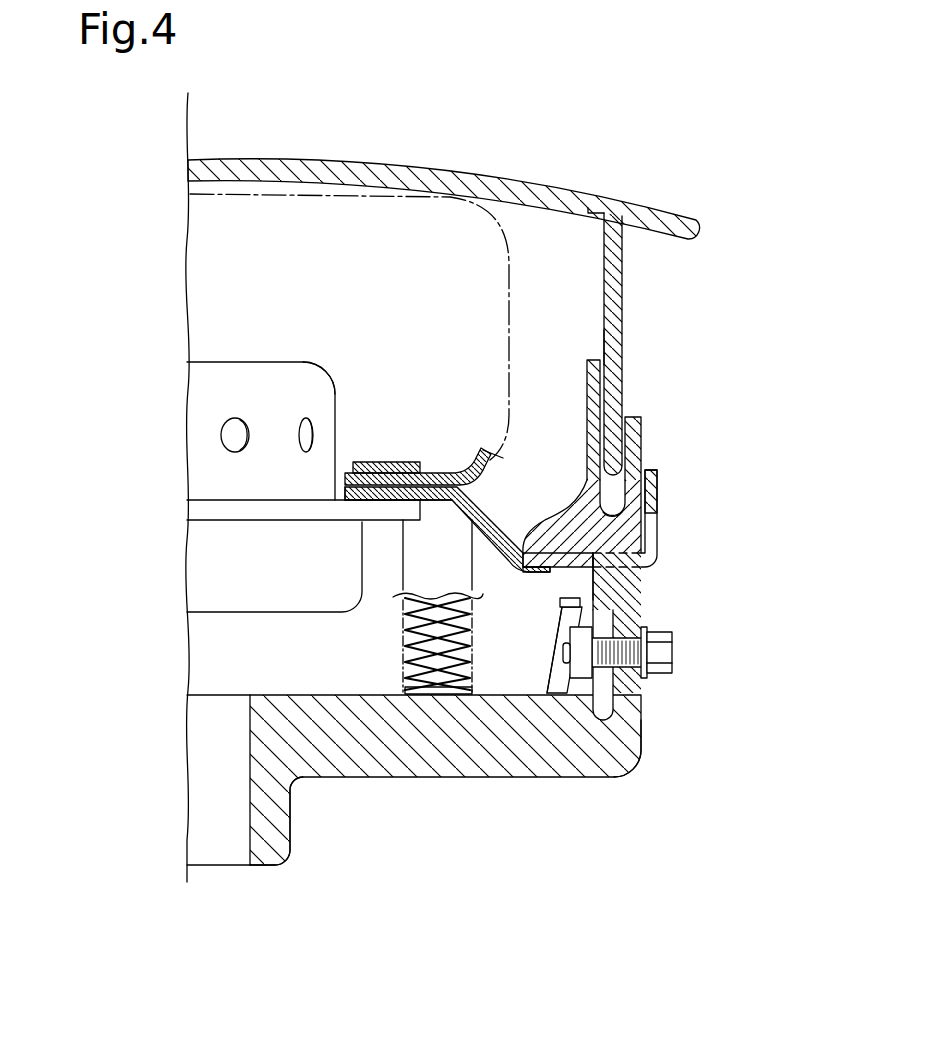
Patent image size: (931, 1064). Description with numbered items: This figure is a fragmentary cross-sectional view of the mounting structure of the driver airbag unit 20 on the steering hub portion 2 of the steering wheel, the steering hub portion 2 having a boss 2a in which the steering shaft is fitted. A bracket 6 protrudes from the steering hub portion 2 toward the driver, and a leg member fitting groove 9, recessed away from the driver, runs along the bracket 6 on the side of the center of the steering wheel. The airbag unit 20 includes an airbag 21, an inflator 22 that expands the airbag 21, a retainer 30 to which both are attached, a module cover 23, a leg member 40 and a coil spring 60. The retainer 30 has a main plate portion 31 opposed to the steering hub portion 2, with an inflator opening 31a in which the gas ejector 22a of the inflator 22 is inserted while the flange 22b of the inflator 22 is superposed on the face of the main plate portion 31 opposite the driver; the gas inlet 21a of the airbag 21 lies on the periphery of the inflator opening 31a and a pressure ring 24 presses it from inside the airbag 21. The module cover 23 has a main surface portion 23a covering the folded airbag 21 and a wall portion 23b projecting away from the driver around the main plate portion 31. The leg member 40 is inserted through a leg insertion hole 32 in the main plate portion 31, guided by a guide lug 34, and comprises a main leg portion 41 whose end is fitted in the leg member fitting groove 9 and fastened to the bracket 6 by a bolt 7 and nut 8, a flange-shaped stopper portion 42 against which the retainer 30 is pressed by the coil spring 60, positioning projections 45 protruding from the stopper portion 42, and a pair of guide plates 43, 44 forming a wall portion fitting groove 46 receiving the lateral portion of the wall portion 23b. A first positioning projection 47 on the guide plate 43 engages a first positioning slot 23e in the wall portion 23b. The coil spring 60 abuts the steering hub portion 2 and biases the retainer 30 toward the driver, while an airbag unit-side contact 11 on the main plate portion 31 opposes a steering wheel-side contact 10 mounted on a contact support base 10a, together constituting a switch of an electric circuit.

The driver airbag unit 20 is at (512, 103).
The airbag 21 is at (513, 283).
The gas inlet 21a is at (345, 480).
The inflator 22 is at (303, 441).
The gas ejector 22a is at (337, 394).
The flange 22b is at (234, 516).
The module cover 23 is at (485, 288).
The main surface portion 23a is at (360, 161).
The wall portion 23b is at (623, 282).
The first positioning slot 23e is at (622, 346).
The pressure ring 24 is at (388, 461).
The retainer 30 is at (411, 525).
The main plate portion 31 is at (433, 502).
The inflator opening 31a is at (340, 499).
The leg insertion hole 32 is at (627, 522).
The guide lug 34 is at (658, 492).
The leg member 40 is at (627, 422).
The stopper portion 42 is at (546, 520).
The guide plate 43 is at (587, 424).
The guide plate 44 is at (642, 440).
The positioning projection 45 is at (540, 575).
The wall portion fitting groove 46 is at (612, 503).
The first positioning projection 47 is at (612, 394).
The coil spring 60 is at (405, 612).
The steering wheel-side contact 10 is at (539, 721).
The contact support base 10a is at (546, 680).
The airbag unit-side contact 11 is at (614, 598).
The bracket 6 is at (444, 729).
The bolt 7 is at (641, 725).
The nut 8 is at (566, 680).
The leg member fitting groove 9 is at (603, 715).
The main leg portion 41 is at (643, 746).
The steering hub portion 2 is at (414, 800).
The boss 2a is at (288, 866).